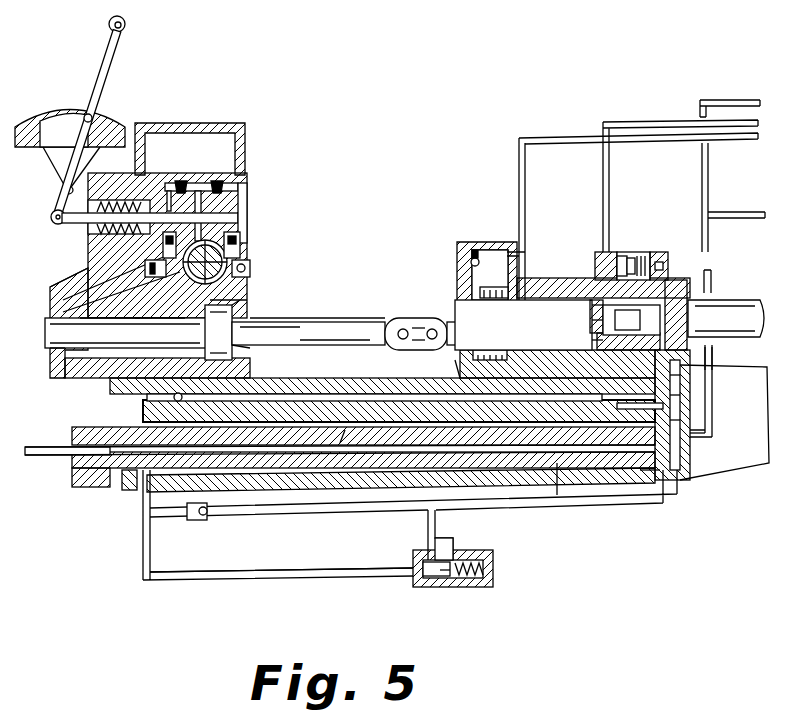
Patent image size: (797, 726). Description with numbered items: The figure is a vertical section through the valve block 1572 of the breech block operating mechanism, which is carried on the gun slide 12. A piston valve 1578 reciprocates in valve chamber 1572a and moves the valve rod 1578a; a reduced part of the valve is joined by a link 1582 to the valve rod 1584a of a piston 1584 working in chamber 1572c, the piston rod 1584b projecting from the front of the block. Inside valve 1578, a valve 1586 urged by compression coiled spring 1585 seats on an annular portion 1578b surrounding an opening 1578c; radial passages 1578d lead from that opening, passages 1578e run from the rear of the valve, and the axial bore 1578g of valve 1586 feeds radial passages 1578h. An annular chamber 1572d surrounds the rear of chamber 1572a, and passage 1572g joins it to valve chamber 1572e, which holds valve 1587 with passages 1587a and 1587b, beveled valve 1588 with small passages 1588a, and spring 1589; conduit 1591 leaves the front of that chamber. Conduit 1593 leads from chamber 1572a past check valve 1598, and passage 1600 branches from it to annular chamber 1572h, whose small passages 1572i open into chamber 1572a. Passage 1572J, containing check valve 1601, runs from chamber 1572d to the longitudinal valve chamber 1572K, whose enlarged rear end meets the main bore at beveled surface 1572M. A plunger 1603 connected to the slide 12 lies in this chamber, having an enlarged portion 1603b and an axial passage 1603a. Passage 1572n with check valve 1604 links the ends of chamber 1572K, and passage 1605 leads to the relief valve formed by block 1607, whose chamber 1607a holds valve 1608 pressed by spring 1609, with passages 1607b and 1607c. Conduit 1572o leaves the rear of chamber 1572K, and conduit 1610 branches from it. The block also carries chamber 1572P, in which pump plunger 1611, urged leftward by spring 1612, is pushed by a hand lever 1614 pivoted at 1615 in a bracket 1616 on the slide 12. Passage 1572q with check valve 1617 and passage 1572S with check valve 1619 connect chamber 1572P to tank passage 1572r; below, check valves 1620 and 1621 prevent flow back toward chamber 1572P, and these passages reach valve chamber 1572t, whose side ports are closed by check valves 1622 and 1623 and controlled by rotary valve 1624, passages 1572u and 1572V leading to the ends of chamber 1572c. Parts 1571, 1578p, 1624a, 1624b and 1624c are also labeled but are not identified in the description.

The gun slide 12 is at (90, 487).
The cover 1571 is at (767, 470).
The valve block 1572 is at (247, 143).
The chamber 1572P is at (142, 125).
The passage 1572q is at (170, 183).
The tank passage 1572r is at (198, 183).
The passage 1572S is at (247, 190).
The valve chamber 1572t is at (240, 300).
The passage 1572u is at (58, 284).
The passage 1572V is at (317, 306).
The chamber 1572c is at (106, 338).
The small passages 1572i is at (457, 292).
The passage 1572g is at (603, 279).
The valve chamber 1572e is at (632, 252).
The conduit and passage 1572o is at (708, 185).
The annular chamber 1572d is at (690, 280).
The valve chamber 1572a is at (712, 435).
The annular chamber 1572h is at (462, 371).
The passage and conduit 1572J is at (372, 372).
The beveled surface 1572M is at (617, 410).
The valve chamber 1572K is at (557, 463).
The passage and conduit 1572n is at (572, 505).
The piston valve 1578 is at (585, 370).
The valve rod 1578a is at (450, 345).
The annular portion 1578b is at (675, 375).
The opening 1578c is at (690, 348).
The radial passages 1578d is at (675, 392).
The passages 1578e is at (711, 278).
The axial bore 1578g is at (592, 320).
The radial passages 1578h is at (690, 318).
The valve port 1578p is at (592, 308).
The link 1582 is at (402, 325).
The piston 1584 is at (245, 348).
The valve rod 1584a is at (325, 325).
The rod 1584b is at (55, 348).
The compression coiled spring 1585 is at (597, 338).
The valve 1586 is at (675, 410).
The valve 1587 is at (620, 252).
The passages 1587a is at (630, 256).
The passages 1587b is at (598, 252).
The beveled valve 1588 is at (642, 256).
The small passages 1588a is at (655, 252).
The compression coiled spring 1589 is at (660, 262).
The conduit and passage 1591 is at (665, 104).
The conduit and passage 1593 is at (519, 178).
The check valve 1598 is at (472, 260).
The passage 1600 is at (522, 260).
The check valve 1601 is at (182, 397).
The plunger 1603 is at (600, 476).
The axial passage 1603a is at (340, 443).
The enlarged portion 1603b is at (640, 470).
The check valve 1604 is at (204, 516).
The passage 1605 is at (302, 578).
The valve block 1607 is at (493, 563).
The valve chamber 1607a is at (423, 566).
The passage 1607b is at (428, 532).
The passage 1607c is at (447, 545).
The valve 1608 is at (450, 578).
The coiled compression spring 1609 is at (485, 578).
The conduit and passage 1610 is at (725, 220).
The pump plunger 1611 is at (215, 245).
The coiled compression spring 1612 is at (97, 200).
The hand lever 1614 is at (83, 115).
The pivot 1615 is at (63, 190).
The bracket 1616 is at (28, 125).
The spring-pressed check valve 1617 is at (180, 181).
The spring-pressed check valve 1619 is at (216, 181).
The spring-pressed check valve 1620 is at (160, 268).
The spring-pressed check valve 1621 is at (176, 240).
The spring-pressed check valve 1622 is at (110, 316).
The spring-pressed check valve 1623 is at (240, 245).
The rotary valve 1624 is at (205, 334).
The coupling part 1624a is at (245, 308).
The coupling bore 1624b is at (159, 316).
The port 1624c is at (250, 268).